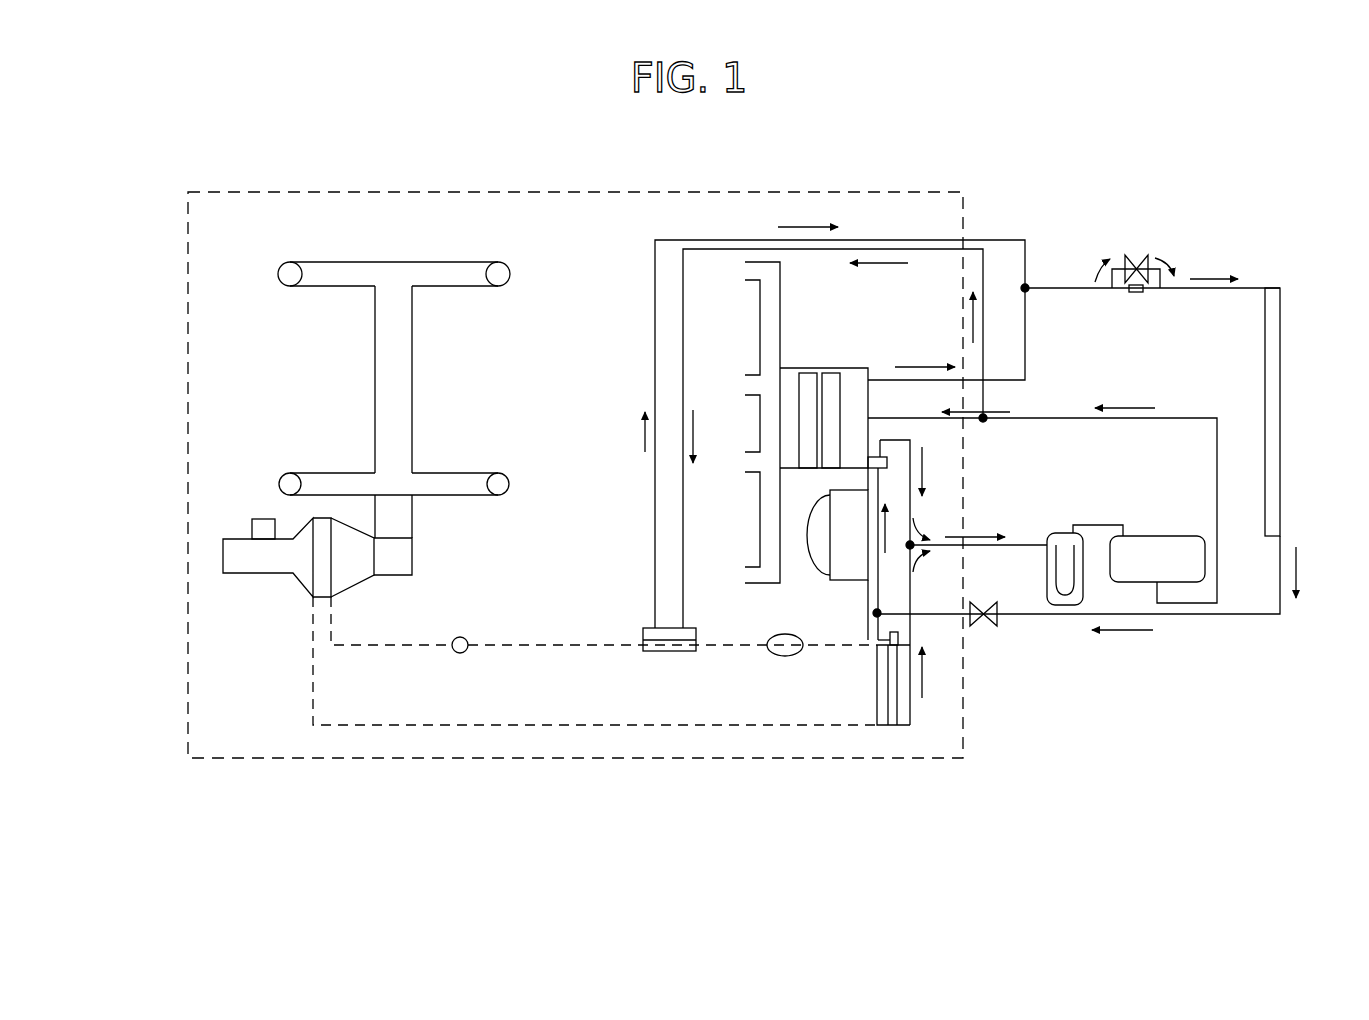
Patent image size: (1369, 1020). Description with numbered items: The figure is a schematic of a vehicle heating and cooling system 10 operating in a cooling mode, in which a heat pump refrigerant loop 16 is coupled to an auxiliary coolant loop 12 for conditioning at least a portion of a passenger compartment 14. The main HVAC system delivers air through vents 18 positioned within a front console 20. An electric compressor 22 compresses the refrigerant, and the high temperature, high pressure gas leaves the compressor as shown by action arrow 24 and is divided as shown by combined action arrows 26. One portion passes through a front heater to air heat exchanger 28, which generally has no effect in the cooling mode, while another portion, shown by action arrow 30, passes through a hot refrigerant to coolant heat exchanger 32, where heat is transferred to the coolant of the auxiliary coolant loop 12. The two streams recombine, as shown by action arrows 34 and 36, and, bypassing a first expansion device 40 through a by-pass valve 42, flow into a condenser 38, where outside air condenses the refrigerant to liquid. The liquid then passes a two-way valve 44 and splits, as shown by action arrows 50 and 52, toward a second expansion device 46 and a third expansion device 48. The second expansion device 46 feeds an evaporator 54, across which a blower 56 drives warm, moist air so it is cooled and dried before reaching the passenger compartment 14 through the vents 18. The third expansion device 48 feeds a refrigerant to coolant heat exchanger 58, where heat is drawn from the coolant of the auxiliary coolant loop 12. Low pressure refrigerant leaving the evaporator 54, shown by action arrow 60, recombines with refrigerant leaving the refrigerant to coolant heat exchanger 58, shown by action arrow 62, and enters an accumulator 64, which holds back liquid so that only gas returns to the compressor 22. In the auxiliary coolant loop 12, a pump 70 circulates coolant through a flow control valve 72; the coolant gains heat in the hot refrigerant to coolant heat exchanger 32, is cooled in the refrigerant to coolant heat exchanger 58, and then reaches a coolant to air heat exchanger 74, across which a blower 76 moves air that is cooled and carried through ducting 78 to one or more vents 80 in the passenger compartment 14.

The vehicle heating and cooling system 10 is at (1258, 243).
The auxiliary coolant loop 12 is at (357, 732).
The passenger compartment 14 is at (188, 362).
The refrigerant loop 16 is at (1253, 620).
The vents 18 is at (760, 295).
The front console 20 is at (780, 300).
The electric compressor 22 is at (1160, 536).
The action arrow 24 is at (1130, 405).
The combined action arrows 26 is at (994, 397).
The front heater to air heat exchanger 28 is at (810, 373).
The action arrow 30 is at (693, 430).
The hot refrigerant to coolant heat exchanger 32 is at (643, 630).
The action arrow 34 is at (1046, 296).
The action arrow 36 is at (1042, 280).
The condenser 38 is at (1282, 385).
The first expansion device 40 is at (1137, 292).
The by-pass valve 42 is at (1140, 262).
The two-way valve 44 is at (997, 622).
The second expansion device 46 is at (880, 440).
The third expansion device 48 is at (898, 635).
The action arrow 50 is at (885, 598).
The action arrow 52 is at (900, 618).
The evaporator 54 is at (836, 373).
The blower 56 is at (828, 572).
The refrigerant to coolant heat exchanger 58 is at (877, 705).
The action arrow 60 is at (922, 470).
The action arrow 62 is at (922, 677).
The accumulator 64 is at (1063, 533).
The pump 70 is at (778, 656).
The flow control valve 72 is at (460, 637).
The coolant to air heat exchanger 74 is at (305, 583).
The blower 76 is at (258, 519).
The ducting 78 is at (412, 375).
The vents 80 is at (510, 262).